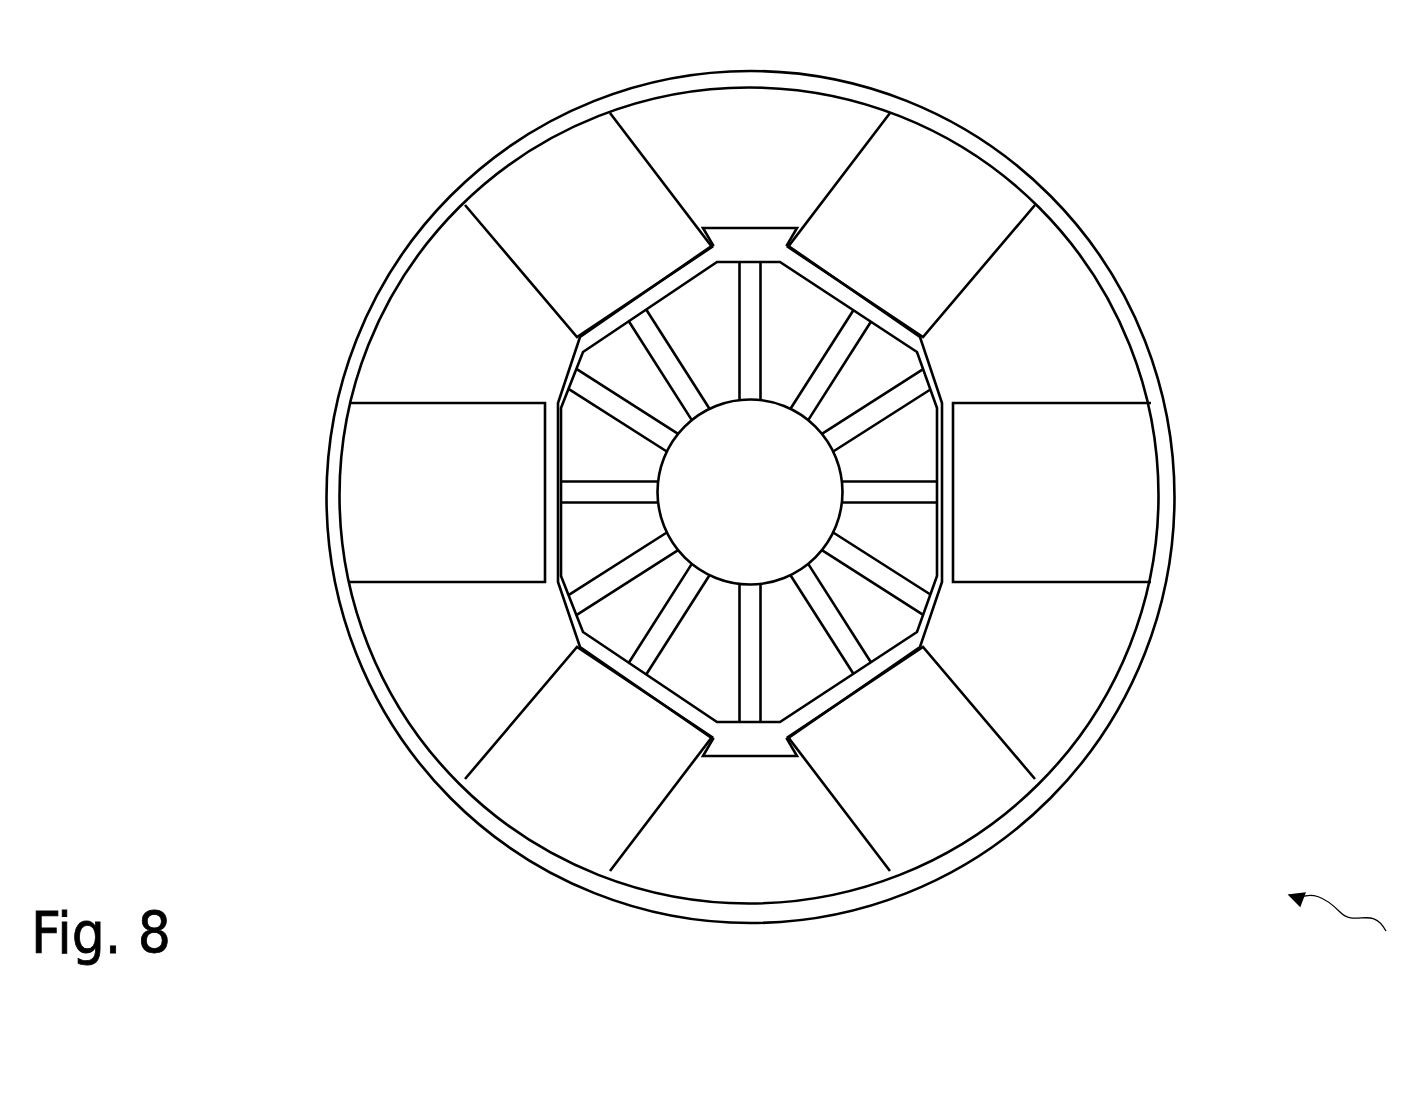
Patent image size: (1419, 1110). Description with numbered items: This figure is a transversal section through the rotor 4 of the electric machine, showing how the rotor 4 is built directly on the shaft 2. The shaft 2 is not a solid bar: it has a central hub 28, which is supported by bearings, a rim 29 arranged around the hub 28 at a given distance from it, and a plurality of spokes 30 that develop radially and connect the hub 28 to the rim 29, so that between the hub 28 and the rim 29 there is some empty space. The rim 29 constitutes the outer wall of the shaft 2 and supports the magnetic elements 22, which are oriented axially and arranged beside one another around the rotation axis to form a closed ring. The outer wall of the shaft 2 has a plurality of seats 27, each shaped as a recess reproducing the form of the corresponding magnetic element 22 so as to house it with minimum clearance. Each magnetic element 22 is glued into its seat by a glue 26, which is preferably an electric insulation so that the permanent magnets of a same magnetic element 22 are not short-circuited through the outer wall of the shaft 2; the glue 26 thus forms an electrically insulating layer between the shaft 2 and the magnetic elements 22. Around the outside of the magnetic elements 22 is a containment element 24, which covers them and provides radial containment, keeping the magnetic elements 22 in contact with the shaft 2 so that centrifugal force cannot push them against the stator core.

The shaft 2 is at (1008, 645).
The rotor 4 is at (1348, 927).
The magnetic elements 22 is at (1040, 327).
The containment element 24 is at (494, 166).
The glue 26 is at (900, 316).
The seats 27 is at (632, 684).
The hub 28 is at (738, 490).
The rim 29 is at (682, 710).
The spokes 30 is at (632, 572).